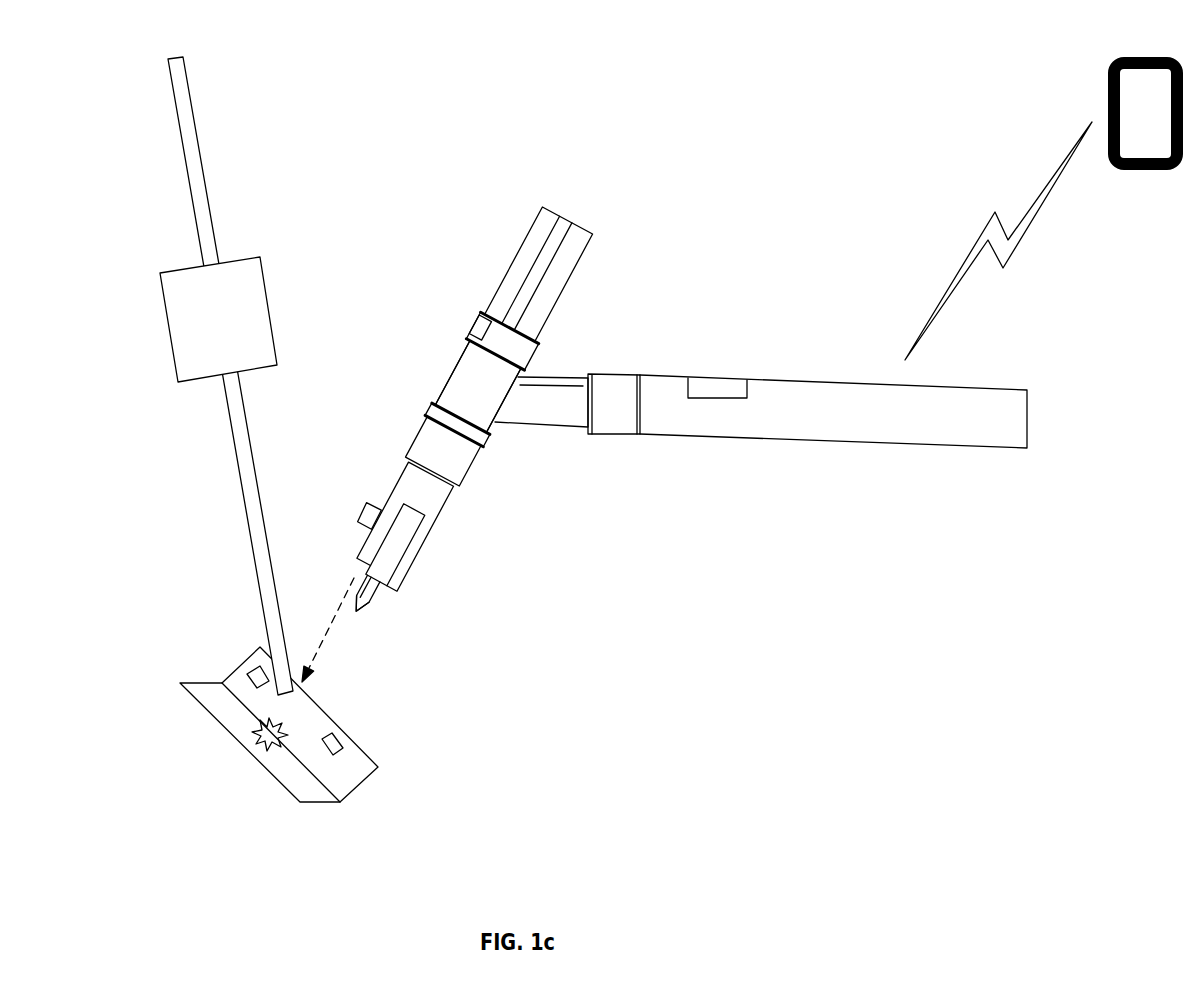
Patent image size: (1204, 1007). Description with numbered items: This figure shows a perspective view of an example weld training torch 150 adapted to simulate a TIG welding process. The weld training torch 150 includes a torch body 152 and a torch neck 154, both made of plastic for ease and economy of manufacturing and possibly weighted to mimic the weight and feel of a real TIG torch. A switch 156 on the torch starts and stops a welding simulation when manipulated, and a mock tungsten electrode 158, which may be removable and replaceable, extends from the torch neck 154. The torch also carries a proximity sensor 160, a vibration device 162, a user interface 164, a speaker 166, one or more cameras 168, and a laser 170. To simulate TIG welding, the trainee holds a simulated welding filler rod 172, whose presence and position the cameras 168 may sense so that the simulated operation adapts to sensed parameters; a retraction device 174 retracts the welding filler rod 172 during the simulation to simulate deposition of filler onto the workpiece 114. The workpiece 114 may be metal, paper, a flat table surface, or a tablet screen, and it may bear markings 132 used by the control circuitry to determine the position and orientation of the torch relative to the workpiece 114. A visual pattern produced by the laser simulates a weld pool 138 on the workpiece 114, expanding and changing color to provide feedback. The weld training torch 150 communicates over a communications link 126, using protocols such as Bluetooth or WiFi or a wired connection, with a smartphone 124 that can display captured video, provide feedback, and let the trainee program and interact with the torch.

The workpiece 114 is at (342, 760).
The smartphone 124 is at (1082, 82).
The communications link 126 is at (972, 196).
The markings 132 is at (256, 662).
The simulated weld pool 138 is at (268, 742).
The weld training torch 150 is at (543, 138).
The torch body 152 is at (873, 403).
The torch neck 154 is at (470, 443).
The switch 156 is at (727, 383).
The mock tungsten electrode 158 is at (371, 591).
The proximity sensor 160 is at (393, 587).
The vibration device 162 is at (417, 543).
The user interface 164 is at (453, 392).
The speaker 166 is at (478, 318).
The cameras 168 is at (367, 508).
The laser 170 is at (370, 538).
The simulated welding filler rod 172 is at (192, 102).
The retraction device 174 is at (235, 293).